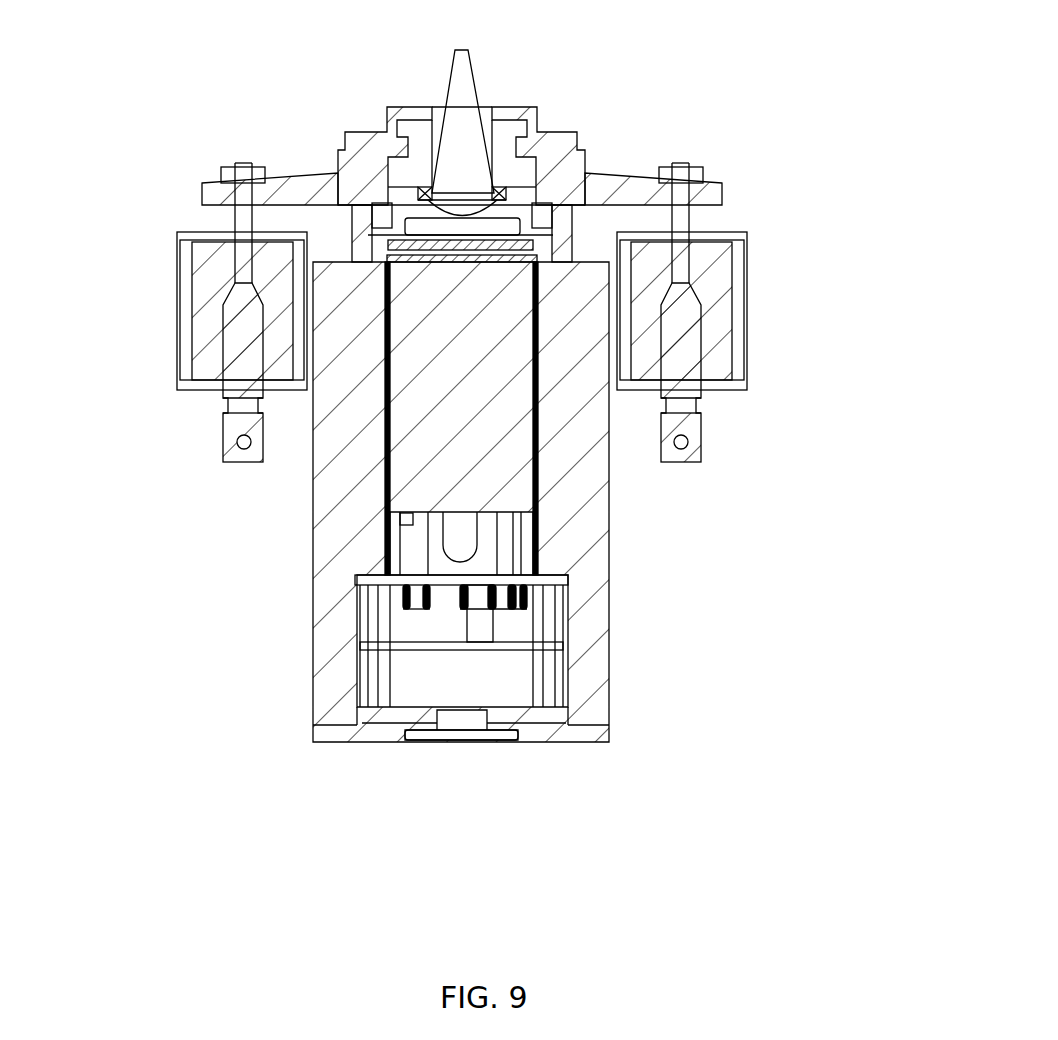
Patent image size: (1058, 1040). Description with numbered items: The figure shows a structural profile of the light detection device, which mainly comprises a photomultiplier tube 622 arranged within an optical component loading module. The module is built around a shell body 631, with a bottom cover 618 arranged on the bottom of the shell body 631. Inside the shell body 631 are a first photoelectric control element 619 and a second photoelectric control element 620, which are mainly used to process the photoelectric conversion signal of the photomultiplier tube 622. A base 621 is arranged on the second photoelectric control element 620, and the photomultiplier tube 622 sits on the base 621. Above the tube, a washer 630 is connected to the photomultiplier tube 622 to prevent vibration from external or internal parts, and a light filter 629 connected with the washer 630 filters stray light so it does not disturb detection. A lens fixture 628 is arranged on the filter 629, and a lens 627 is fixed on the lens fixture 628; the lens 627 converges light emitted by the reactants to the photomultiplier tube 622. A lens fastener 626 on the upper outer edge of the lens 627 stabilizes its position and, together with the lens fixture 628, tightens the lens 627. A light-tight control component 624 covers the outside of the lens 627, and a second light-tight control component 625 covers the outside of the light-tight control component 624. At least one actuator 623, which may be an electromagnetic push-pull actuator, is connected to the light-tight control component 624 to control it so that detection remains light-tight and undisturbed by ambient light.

The bottom cover 618 is at (372, 729).
The first photoelectric control element 619 is at (482, 635).
The second photoelectric control element 620 is at (443, 598).
The base 621 is at (435, 548).
The photomultiplier tube 622 is at (485, 413).
The actuator 623 is at (720, 288).
The light-tight control component 624 is at (612, 190).
The second light-tight control component 625 is at (542, 141).
The lens fastener 626 is at (497, 193).
The lens 627 is at (460, 196).
The lens fixture 628 is at (363, 227).
The light filter 629 is at (392, 243).
The washer 630 is at (318, 296).
The shell body 631 is at (355, 512).